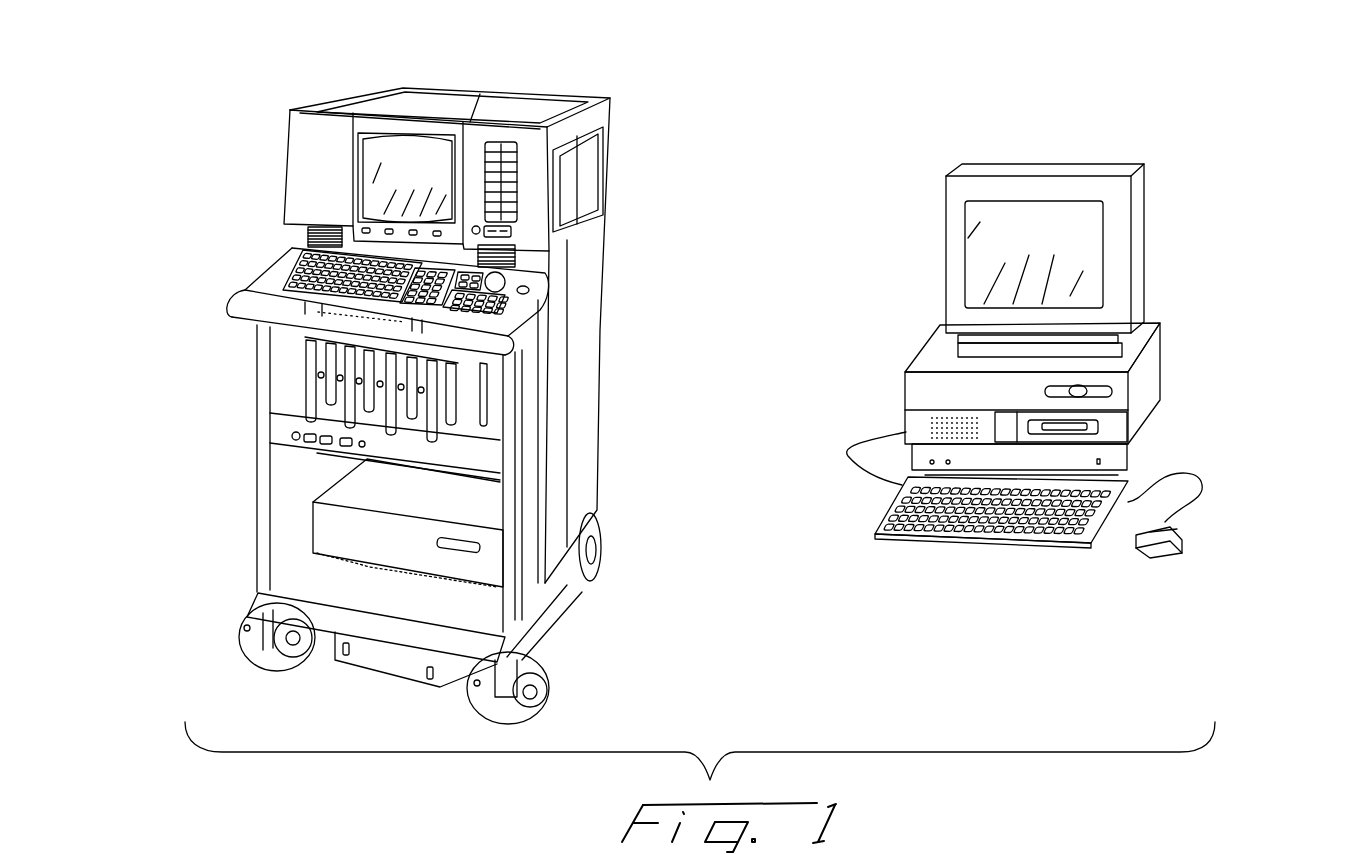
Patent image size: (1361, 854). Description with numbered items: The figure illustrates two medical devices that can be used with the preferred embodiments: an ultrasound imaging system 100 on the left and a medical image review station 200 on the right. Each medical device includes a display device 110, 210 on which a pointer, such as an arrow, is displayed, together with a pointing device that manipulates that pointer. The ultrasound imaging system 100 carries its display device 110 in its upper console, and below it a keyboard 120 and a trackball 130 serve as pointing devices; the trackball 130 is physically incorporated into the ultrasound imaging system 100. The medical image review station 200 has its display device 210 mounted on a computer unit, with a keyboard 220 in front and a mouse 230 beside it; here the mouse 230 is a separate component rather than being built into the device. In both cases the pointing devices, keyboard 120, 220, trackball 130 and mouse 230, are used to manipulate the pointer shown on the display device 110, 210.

The ultrasound imaging system 100 is at (607, 270).
The display device 110 is at (440, 157).
The keyboard 120 is at (293, 263).
The trackball 130 is at (505, 287).
The medical image review station 200 is at (1210, 238).
The display device 210 is at (1052, 166).
The keyboard 220 is at (978, 543).
The mouse 230 is at (1182, 541).